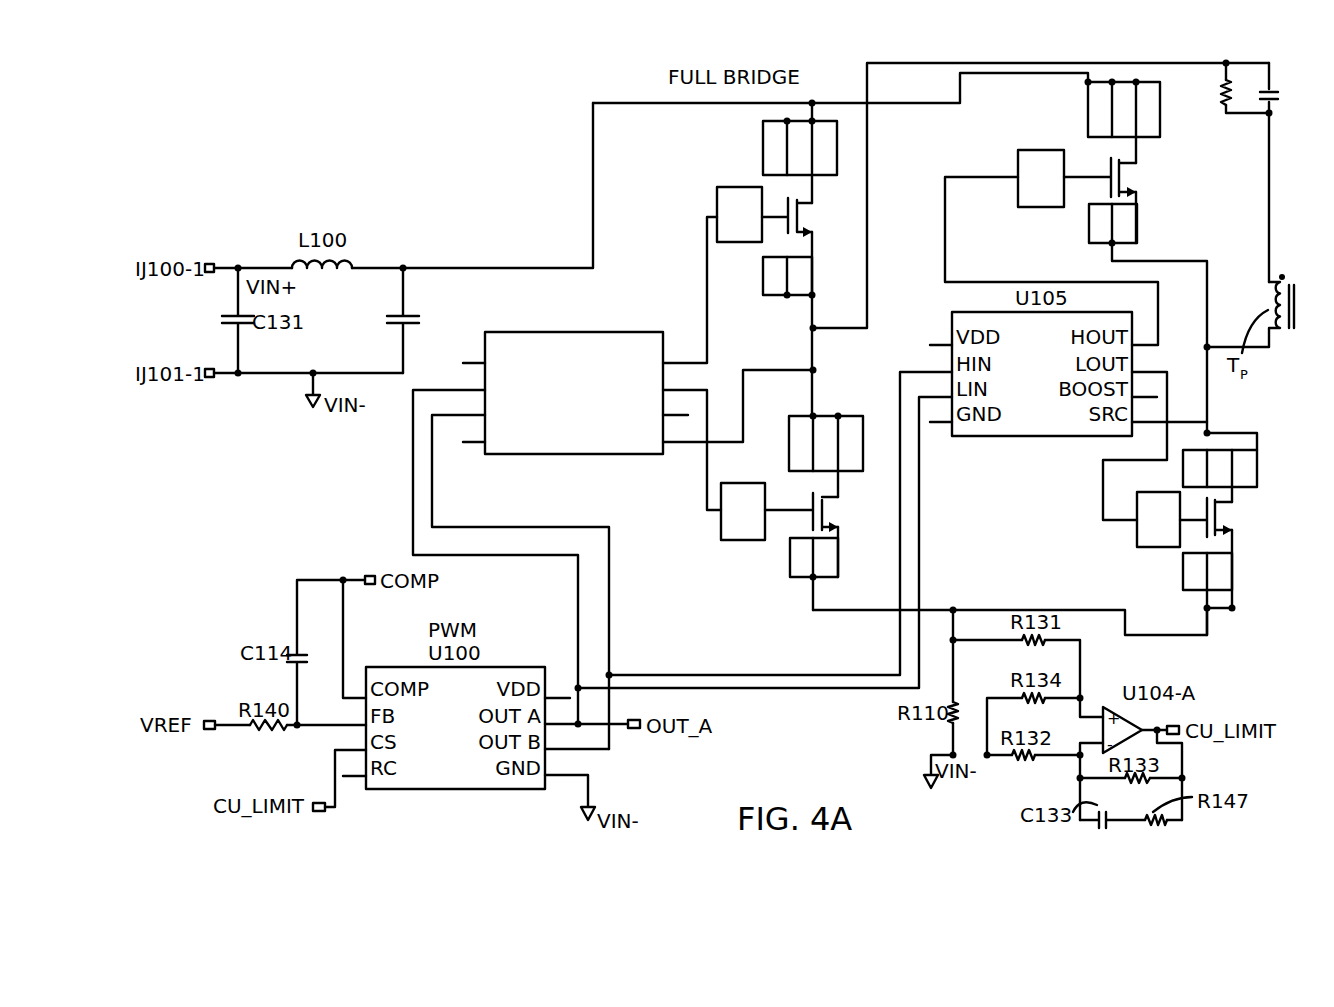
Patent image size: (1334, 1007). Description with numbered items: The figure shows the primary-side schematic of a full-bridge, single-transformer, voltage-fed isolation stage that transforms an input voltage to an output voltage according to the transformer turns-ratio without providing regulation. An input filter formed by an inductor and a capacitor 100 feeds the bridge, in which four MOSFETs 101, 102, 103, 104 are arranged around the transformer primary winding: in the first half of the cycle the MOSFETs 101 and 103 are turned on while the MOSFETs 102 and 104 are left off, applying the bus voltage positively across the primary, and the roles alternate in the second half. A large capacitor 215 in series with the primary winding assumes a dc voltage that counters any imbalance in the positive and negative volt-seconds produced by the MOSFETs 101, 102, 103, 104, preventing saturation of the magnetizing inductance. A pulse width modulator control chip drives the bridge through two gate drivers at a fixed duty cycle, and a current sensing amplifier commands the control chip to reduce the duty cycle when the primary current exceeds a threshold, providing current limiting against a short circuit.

The input capacitor 100 is at (418, 320).
The MOSFET 101 is at (640, 426).
The MOSFET 102 is at (964, 524).
The MOSFET 103 is at (1195, 503).
The MOSFET 104 is at (1076, 256).
The capacitor 215 is at (1267, 90).